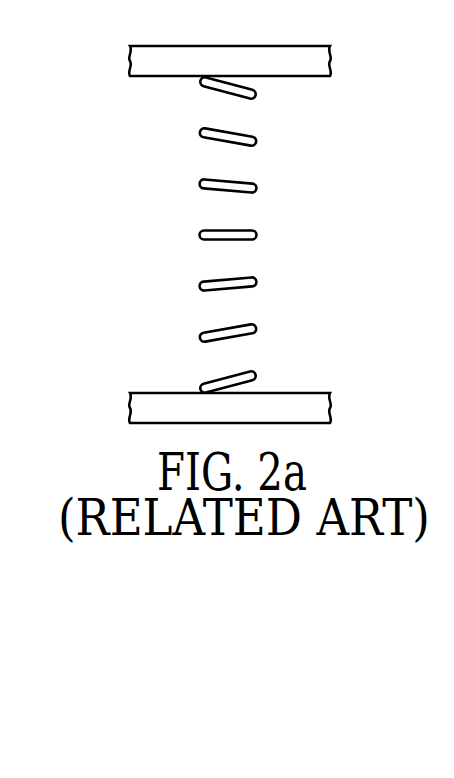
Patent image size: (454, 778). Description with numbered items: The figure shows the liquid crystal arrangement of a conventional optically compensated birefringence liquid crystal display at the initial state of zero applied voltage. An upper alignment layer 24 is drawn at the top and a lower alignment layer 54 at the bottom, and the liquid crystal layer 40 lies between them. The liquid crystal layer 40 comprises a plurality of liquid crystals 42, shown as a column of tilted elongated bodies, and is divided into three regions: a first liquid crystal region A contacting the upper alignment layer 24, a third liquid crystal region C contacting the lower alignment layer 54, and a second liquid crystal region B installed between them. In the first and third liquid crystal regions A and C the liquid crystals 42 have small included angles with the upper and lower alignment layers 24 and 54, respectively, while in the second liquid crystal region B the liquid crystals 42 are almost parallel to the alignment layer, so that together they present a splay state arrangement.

The upper alignment layer 24 is at (312, 60).
The lower alignment layer 54 is at (312, 408).
The liquid crystal layer 40 is at (164, 235).
The liquid crystals 42 is at (194, 235).
The first liquid crystal region A is at (332, 76).
The second liquid crystal region B is at (332, 353).
The third liquid crystal region C is at (332, 110).